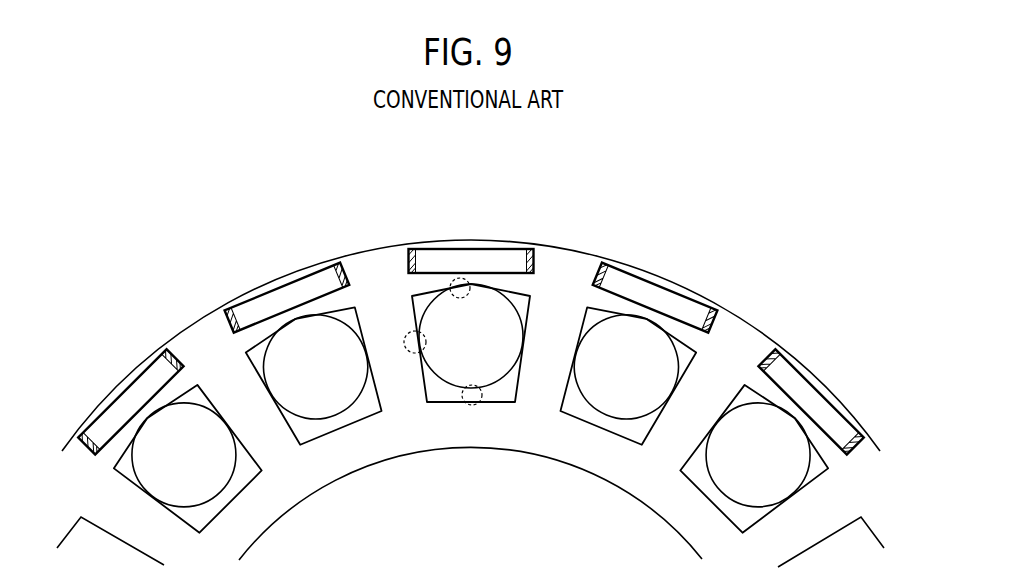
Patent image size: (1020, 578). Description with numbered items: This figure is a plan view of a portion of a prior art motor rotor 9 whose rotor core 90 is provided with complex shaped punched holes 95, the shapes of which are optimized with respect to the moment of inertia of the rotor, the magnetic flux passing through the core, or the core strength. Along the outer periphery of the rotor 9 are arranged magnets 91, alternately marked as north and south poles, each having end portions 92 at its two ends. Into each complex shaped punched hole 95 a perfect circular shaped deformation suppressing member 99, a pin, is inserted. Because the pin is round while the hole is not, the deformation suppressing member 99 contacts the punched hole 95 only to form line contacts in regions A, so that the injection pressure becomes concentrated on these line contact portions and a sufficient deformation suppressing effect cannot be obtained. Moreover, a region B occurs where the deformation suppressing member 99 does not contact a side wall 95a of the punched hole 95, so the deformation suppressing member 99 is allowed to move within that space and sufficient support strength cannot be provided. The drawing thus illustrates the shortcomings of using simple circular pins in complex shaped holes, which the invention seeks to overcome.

The motor rotor 9 is at (232, 232).
The rotor core 90 is at (588, 446).
The magnet 91 is at (518, 256).
The magnet end portion 92 is at (772, 353).
The punched hole 95 is at (233, 497).
The side wall 95a is at (499, 403).
The deformation suppressing member 99 is at (443, 370).
The region A is at (405, 333).
The region B is at (468, 408).